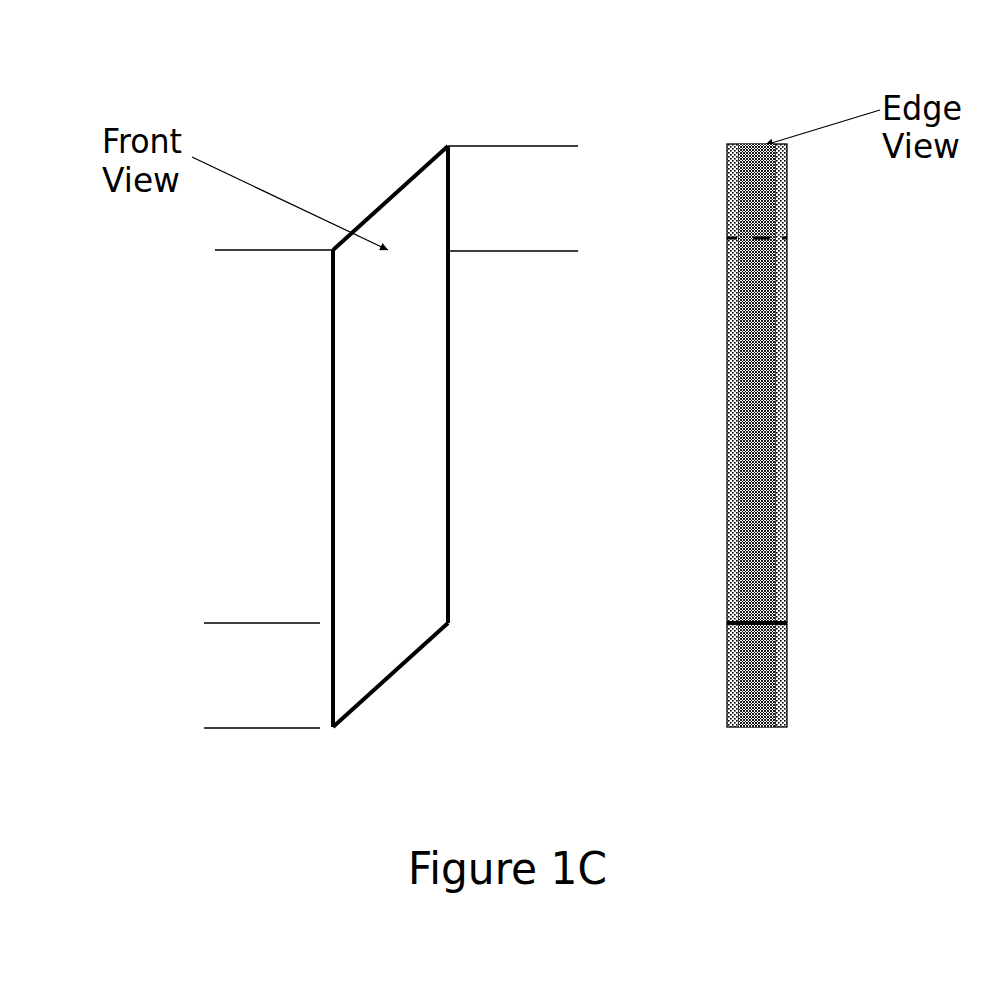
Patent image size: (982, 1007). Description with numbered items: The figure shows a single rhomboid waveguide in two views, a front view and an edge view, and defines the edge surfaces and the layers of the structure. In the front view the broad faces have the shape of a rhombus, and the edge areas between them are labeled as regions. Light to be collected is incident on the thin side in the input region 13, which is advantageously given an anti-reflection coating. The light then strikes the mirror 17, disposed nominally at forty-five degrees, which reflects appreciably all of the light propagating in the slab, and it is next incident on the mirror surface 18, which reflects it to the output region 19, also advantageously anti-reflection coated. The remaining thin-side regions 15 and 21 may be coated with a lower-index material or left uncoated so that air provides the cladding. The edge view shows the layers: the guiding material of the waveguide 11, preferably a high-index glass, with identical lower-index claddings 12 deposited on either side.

The guiding material of the waveguide 11 is at (752, 647).
The claddings 12 is at (727, 693).
The input region 13 is at (297, 577).
The thin-side region 15 is at (239, 623).
The mirror 17 is at (402, 670).
The mirror surface 18 is at (403, 180).
The output region 19 is at (518, 308).
The thin-side region 21 is at (553, 251).